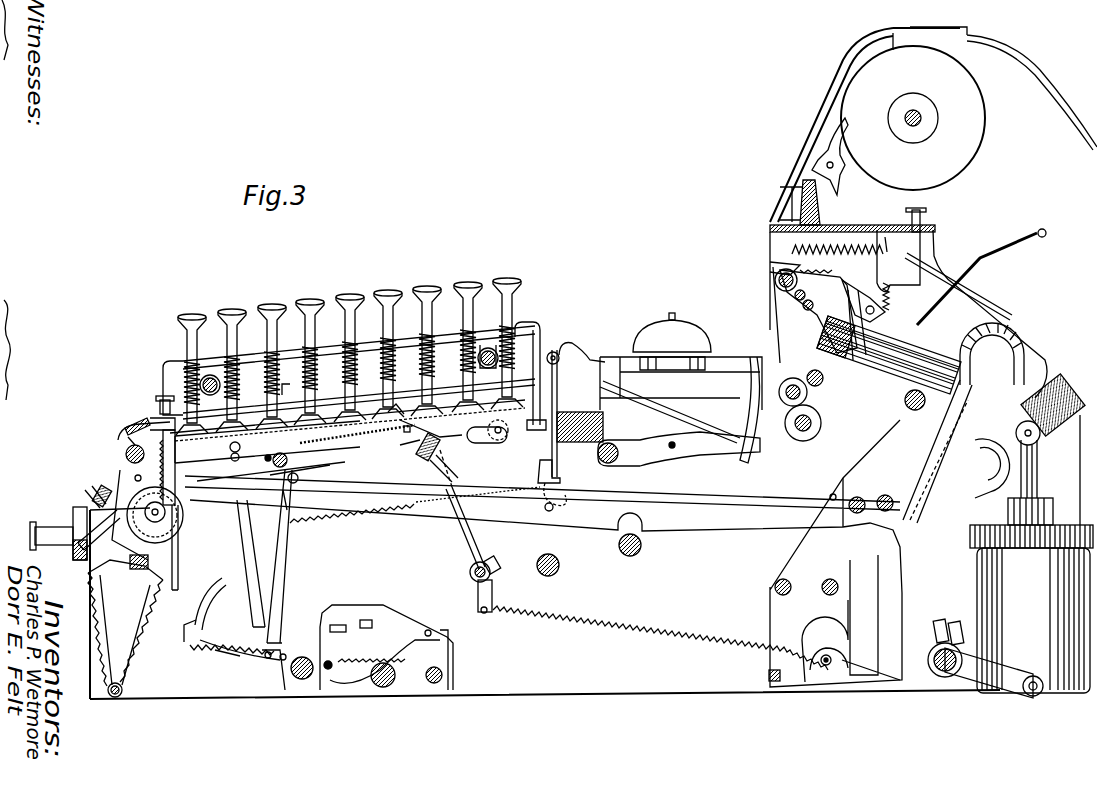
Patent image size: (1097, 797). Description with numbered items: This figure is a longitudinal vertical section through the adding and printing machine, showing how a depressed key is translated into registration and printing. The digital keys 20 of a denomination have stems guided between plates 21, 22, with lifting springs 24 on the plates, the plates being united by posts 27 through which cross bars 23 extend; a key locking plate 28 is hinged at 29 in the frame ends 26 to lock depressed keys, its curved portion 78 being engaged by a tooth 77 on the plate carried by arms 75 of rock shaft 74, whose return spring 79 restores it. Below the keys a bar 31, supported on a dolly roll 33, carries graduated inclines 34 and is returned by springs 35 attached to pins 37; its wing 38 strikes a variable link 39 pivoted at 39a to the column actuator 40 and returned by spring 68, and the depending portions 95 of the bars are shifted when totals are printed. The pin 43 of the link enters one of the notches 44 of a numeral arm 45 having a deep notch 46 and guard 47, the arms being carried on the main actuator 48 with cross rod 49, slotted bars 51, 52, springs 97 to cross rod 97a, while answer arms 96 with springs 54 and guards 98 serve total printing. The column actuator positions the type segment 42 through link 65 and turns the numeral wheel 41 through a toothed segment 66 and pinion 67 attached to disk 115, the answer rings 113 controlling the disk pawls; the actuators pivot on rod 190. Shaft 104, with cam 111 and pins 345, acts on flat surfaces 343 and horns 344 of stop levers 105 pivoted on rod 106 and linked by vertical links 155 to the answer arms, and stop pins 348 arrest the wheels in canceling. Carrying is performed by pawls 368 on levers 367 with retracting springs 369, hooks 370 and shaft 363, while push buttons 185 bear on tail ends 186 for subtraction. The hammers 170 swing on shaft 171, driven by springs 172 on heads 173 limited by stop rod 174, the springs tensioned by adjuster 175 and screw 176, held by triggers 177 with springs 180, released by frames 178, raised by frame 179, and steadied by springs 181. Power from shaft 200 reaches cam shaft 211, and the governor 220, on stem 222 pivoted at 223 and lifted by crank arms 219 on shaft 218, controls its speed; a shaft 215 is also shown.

The digital keys 20 is at (245, 305).
The guide plates 21 is at (332, 346).
The guide plates 22 is at (405, 392).
The cross bars 23 is at (207, 365).
The lifting springs 24 is at (172, 368).
The ends of the key frames 26 is at (540, 335).
The posts 27 is at (487, 340).
The key locking plate 28 is at (358, 418).
The hinge of key locking plate 29 is at (600, 385).
The bar 31 is at (398, 432).
The dolly roll 33 is at (500, 442).
The inclines 34 is at (398, 410).
The springs 35 is at (360, 442).
The pins 37 is at (415, 452).
The wing 38 is at (290, 452).
The variable link 39 is at (290, 560).
The pivotal attachment 39a is at (330, 446).
The column actuator 40 is at (542, 503).
The numeral wheel 41 is at (222, 470).
The type segment 42 is at (720, 380).
The pin 43 is at (268, 662).
The notches 44 is at (222, 652).
The numeral arm 45 is at (216, 628).
The deep notch 46 is at (315, 622).
The guard 47 is at (283, 662).
The main actuator 48 is at (300, 680).
The cross rod 49 is at (434, 684).
The slotted cross bar 51 is at (340, 625).
The slotted cross bar 52 is at (455, 662).
The spring 54 is at (368, 622).
The link 65 is at (560, 455).
The toothed segment 66 is at (135, 467).
The pinion 67 is at (152, 508).
The spring 68 is at (345, 517).
The rock shaft 74 is at (470, 570).
The arms 75 is at (476, 548).
The teeth 77 is at (425, 455).
The curved portion 78 is at (446, 440).
The spring 79 is at (636, 630).
The depending portions 95 is at (448, 470).
The answer arms 96 is at (215, 607).
The spring 97 is at (425, 630).
The cross rod 97a is at (328, 672).
The guards 98 is at (182, 628).
The rock shaft 104 is at (126, 430).
The locking stop levers 105 is at (175, 456).
The cross rod 106 is at (255, 500).
The cam 111 is at (128, 452).
The answer rings 113 is at (178, 545).
The disk 115 is at (180, 527).
The vertical links 155 is at (252, 552).
The printing hammers 170 is at (835, 304).
The shaft 171 is at (776, 284).
The springs 172 is at (872, 265).
The heads 173 is at (778, 270).
The stop rod 174 is at (815, 255).
The swinging adjuster 175 is at (915, 265).
The adjusting screw 176 is at (925, 220).
The triggers 177 is at (858, 298).
The releasing frames 178 is at (918, 358).
The swinging frame 179 is at (805, 307).
The springs 180 is at (893, 300).
The spring 181 is at (816, 275).
The spring push buttons 185 is at (46, 525).
The tail ends 186 is at (82, 555).
The rod 190 is at (836, 497).
The shaft 200 is at (383, 688).
The shaft 211 is at (630, 556).
The shaft 215 is at (548, 576).
The shaft 218 is at (945, 678).
The crank arms 219 is at (1005, 680).
The governor 220 is at (1031, 554).
The stem 222 is at (1045, 479).
The pivotal attachment 223 is at (1038, 443).
The flat surfaces 343 is at (128, 437).
The overhanging horns 344 is at (158, 406).
The pins 345 is at (140, 420).
The stop pins 348 is at (135, 475).
The shaft 363 is at (88, 496).
The swinging lever 367 is at (140, 568).
The carrying pawls 368 is at (100, 490).
The retracting springs 369 is at (150, 640).
The carrying hooks 370 is at (92, 568).